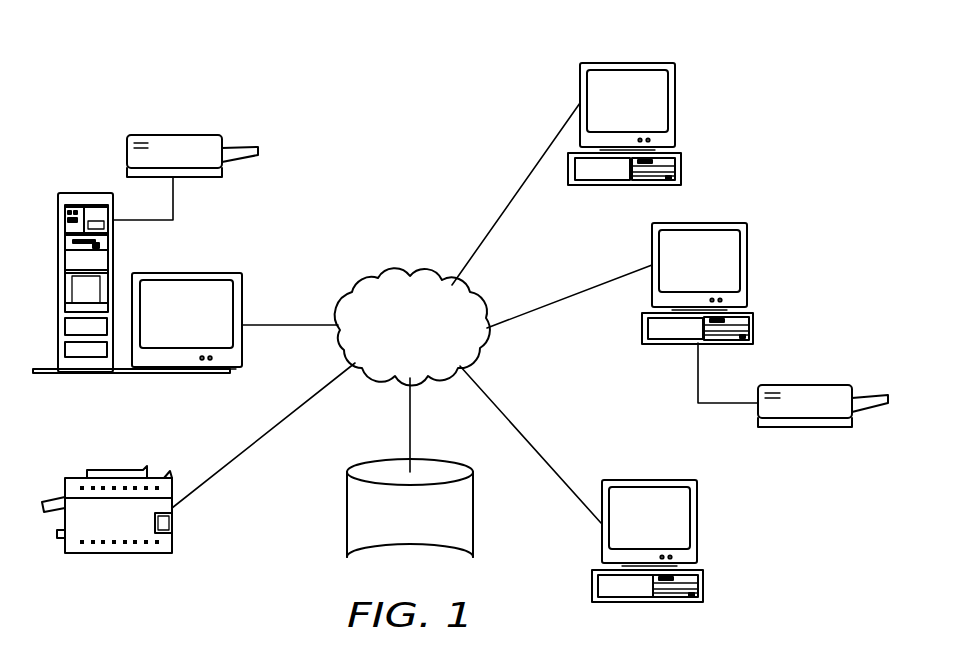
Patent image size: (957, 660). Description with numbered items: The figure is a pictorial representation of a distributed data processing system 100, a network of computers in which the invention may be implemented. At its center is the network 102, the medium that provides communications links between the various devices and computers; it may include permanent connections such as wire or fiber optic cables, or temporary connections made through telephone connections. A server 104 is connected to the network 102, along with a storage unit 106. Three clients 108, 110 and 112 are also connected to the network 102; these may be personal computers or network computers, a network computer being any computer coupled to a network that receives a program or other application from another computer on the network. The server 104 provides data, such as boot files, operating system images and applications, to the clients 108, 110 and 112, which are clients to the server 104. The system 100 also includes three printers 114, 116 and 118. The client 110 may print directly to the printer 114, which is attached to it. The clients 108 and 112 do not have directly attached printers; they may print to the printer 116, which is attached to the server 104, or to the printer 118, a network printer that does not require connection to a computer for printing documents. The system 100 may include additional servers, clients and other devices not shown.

The distributed data processing system 100 is at (337, 121).
The network 102 is at (430, 356).
The server 104 is at (202, 332).
The storage unit 106 is at (428, 537).
The client 108 is at (645, 117).
The client 110 is at (718, 277).
The client 112 is at (666, 536).
The printer 114 is at (820, 430).
The printer 116 is at (177, 135).
The printer 118 is at (117, 555).